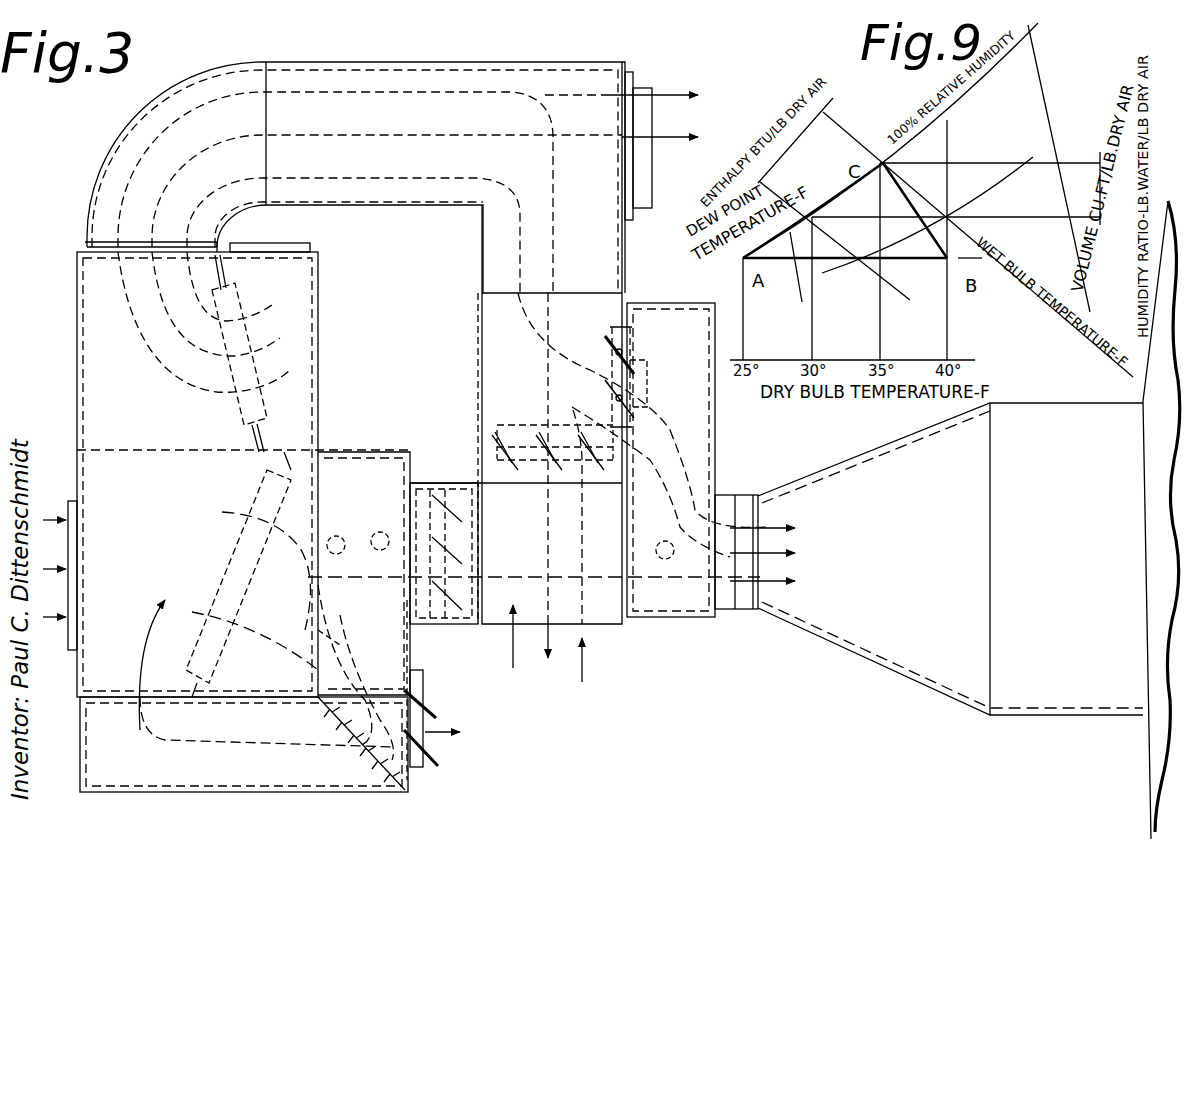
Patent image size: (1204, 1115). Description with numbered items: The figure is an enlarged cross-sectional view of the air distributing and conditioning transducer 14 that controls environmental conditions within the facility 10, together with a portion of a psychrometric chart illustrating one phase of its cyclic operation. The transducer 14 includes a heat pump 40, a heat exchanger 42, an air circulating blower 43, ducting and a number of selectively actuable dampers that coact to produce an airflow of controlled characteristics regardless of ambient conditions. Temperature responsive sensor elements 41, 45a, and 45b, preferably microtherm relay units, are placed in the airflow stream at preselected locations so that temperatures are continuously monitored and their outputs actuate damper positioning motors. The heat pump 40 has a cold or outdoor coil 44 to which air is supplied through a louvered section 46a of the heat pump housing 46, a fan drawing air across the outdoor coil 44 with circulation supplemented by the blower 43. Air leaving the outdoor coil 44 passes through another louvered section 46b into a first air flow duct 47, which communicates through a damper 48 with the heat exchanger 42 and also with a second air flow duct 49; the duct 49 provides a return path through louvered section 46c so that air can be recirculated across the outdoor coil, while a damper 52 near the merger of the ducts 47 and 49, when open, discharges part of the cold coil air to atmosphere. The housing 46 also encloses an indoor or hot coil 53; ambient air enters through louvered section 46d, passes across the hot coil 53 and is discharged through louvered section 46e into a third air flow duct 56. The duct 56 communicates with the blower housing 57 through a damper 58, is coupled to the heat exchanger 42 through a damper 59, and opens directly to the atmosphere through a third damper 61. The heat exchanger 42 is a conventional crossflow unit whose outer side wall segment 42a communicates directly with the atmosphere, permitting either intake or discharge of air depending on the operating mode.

The facility 10 is at (1136, 786).
The air distributing and conditioning transducer 14 is at (78, 145).
The heat pump 40 is at (100, 333).
The temperature responsive sensor element 41 is at (336, 555).
The heat exchanger 42 is at (558, 637).
The outer side wall segment 42a is at (500, 630).
The air circulating blower 43 is at (748, 618).
The outdoor coil 44 is at (240, 566).
The temperature responsive sensor element 45a is at (380, 540).
The temperature responsive sensor element 45b is at (665, 558).
The heat pump housing 46 is at (72, 366).
The louvered section 46a is at (78, 607).
The louvered section 46b is at (325, 628).
The louvered section 46c is at (130, 700).
The louvered section 46d is at (305, 243).
The louvered section 46e is at (115, 245).
The first air flow duct 47 is at (364, 462).
The damper 48 is at (432, 624).
The second air flow duct 49 is at (255, 792).
The damper 52 is at (425, 745).
The indoor coil 53 is at (245, 312).
The third air flow duct 56 is at (217, 95).
The blower housing 57 is at (748, 492).
The damper 58 is at (640, 345).
The damper 59 is at (490, 430).
The third damper 61 is at (660, 92).